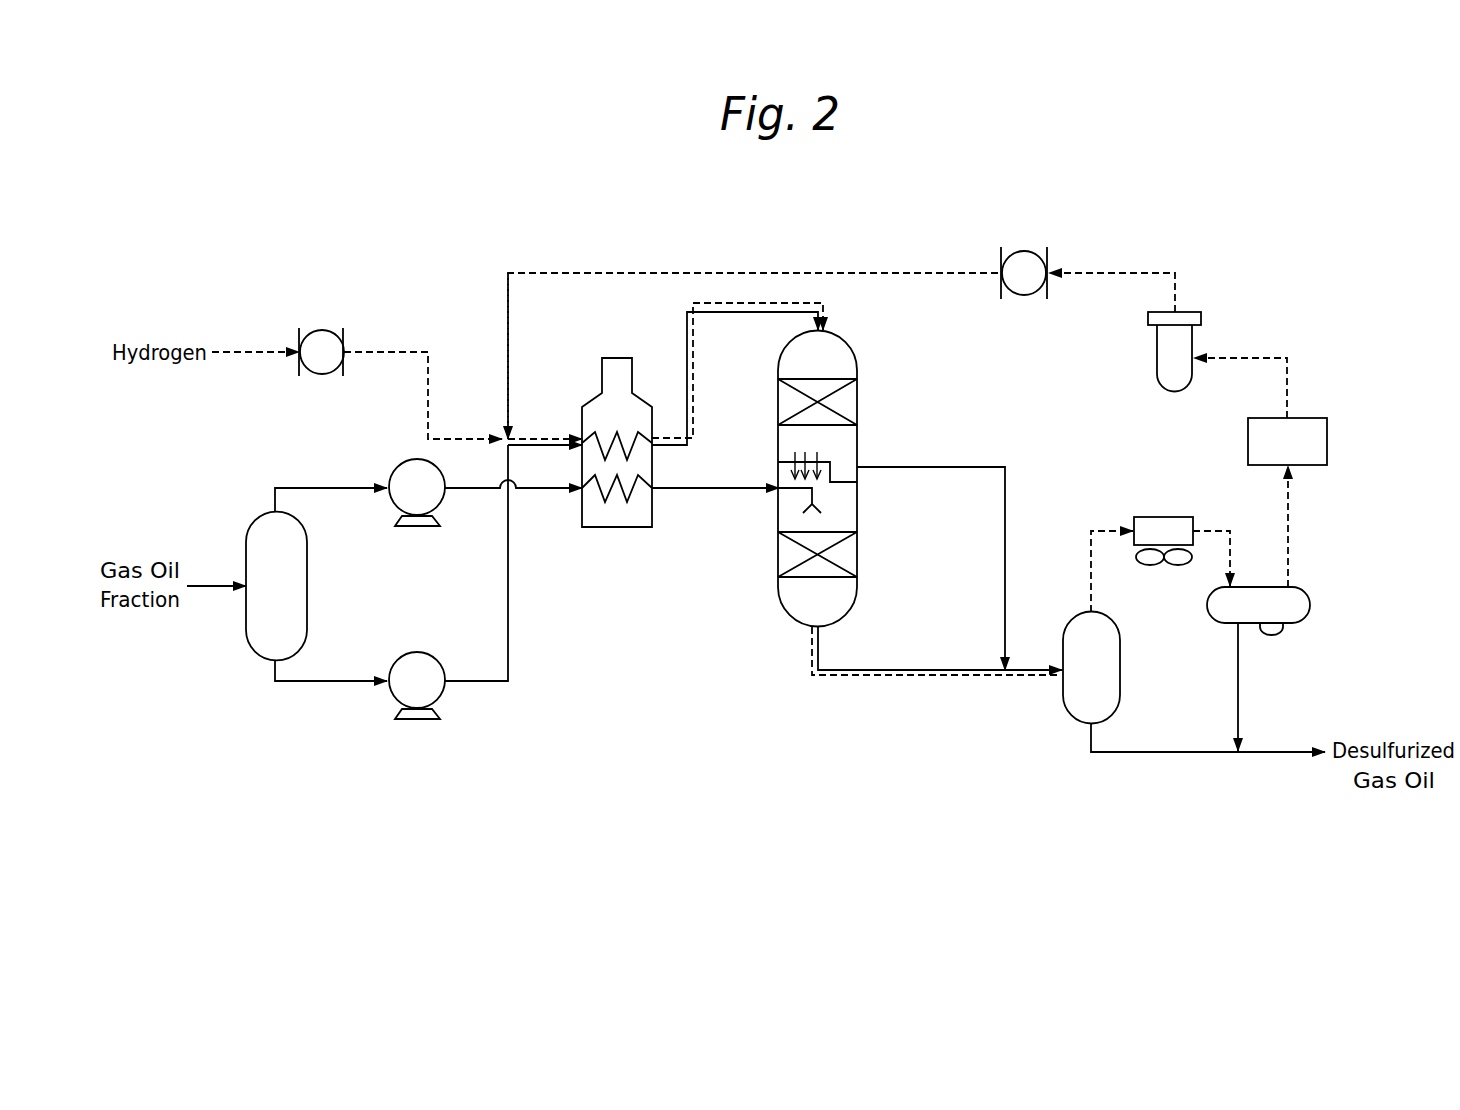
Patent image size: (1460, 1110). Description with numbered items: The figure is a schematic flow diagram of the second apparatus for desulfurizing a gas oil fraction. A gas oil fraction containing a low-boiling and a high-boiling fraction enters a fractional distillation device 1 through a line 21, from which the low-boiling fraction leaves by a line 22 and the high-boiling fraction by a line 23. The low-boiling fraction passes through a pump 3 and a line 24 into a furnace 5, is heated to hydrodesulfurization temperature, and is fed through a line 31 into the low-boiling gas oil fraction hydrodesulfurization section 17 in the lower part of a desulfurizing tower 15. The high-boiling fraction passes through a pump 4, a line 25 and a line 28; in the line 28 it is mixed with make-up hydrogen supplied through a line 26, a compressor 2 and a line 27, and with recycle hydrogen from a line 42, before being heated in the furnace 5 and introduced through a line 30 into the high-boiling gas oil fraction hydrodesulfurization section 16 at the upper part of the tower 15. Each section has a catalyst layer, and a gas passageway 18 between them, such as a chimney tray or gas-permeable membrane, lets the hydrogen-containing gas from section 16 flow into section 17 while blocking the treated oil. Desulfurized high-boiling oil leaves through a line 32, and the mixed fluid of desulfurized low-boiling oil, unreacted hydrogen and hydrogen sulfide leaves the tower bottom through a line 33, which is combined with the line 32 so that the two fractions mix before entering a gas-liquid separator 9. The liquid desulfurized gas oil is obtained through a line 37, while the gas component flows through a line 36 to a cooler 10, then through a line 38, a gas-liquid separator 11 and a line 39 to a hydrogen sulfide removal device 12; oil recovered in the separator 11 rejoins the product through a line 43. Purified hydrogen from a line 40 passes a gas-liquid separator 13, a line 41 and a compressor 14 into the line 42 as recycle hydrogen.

The fractional distillation device 1 is at (307, 582).
The compressor 2 is at (322, 328).
The pump 3 is at (412, 460).
The pump 4 is at (412, 652).
The furnace 5 is at (602, 378).
The gas-liquid separator 9 is at (1120, 663).
The cooler 10 is at (1160, 516).
The gas-liquid separator 11 is at (1310, 600).
The hydrogen sulfide removal device 12 is at (1327, 437).
The gas-liquid separator 13 is at (1157, 347).
The compressor 14 is at (1022, 250).
The desulfurizing tower 15 is at (855, 350).
The high-boiling gas oil fraction hydrodesulfurization section 16 is at (898, 337).
The low-boiling gas oil fraction hydrodesulfurization section 17 is at (898, 482).
The gas passageway 18 is at (772, 452).
The line 21 is at (212, 582).
The line 22 is at (325, 487).
The line 23 is at (328, 680).
The line 24 is at (470, 492).
The line 25 is at (477, 685).
The line 26 is at (238, 350).
The line 27 is at (385, 350).
The line 28 is at (572, 440).
The line 30 is at (690, 363).
The line 31 is at (712, 490).
The line 32 is at (1006, 507).
The line 33 is at (848, 677).
The line 36 is at (1092, 585).
The line 37 is at (1283, 757).
The line 38 is at (1230, 555).
The line 39 is at (1290, 525).
The line 40 is at (1258, 357).
The line 41 is at (1118, 272).
The line 42 is at (700, 272).
The line 43 is at (1240, 672).